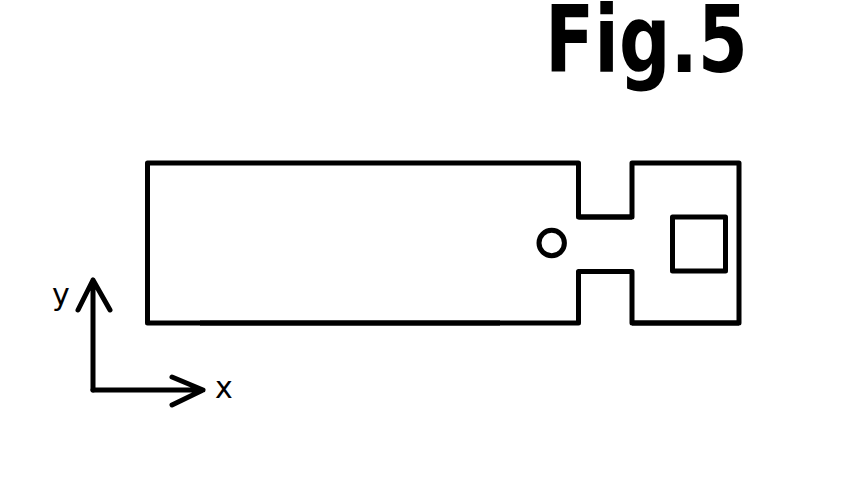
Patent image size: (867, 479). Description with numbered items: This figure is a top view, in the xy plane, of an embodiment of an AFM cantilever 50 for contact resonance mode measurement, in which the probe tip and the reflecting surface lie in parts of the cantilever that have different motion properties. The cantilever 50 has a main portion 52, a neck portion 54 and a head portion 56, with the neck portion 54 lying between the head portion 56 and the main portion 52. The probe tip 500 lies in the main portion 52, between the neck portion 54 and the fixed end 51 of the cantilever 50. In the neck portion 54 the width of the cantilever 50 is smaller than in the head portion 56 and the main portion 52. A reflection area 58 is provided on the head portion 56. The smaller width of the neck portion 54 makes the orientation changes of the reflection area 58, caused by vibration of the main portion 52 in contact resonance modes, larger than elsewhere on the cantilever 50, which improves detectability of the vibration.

The cantilever 50 is at (263, 115).
The fixed end 51 is at (145, 240).
The main portion 52 is at (337, 327).
The neck portion 54 is at (602, 273).
The head portion 56 is at (636, 325).
The reflection area 58 is at (685, 228).
The probe tip 500 is at (545, 232).